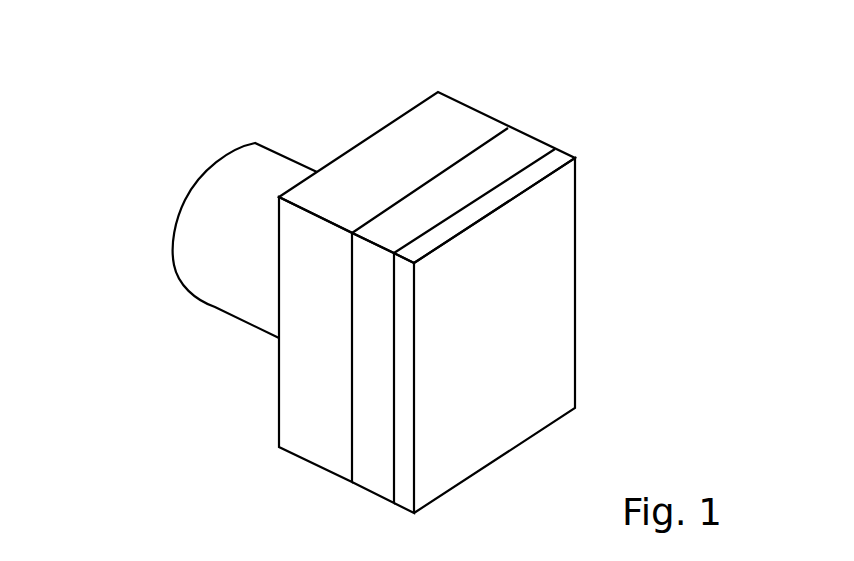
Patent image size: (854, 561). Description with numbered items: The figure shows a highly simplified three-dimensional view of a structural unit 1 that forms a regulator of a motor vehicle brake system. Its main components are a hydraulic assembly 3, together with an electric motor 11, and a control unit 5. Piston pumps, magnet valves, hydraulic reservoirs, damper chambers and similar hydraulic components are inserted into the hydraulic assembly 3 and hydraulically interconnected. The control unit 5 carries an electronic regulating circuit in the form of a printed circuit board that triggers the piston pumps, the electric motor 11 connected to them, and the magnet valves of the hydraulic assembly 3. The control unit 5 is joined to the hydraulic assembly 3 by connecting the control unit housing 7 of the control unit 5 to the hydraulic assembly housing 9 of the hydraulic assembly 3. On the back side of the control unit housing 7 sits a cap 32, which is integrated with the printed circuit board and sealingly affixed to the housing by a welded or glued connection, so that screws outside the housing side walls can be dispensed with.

The structural unit 1 is at (538, 104).
The hydraulic assembly 3 is at (312, 464).
The control unit 5 is at (388, 500).
The control unit housing 7 is at (377, 450).
The hydraulic assembly housing 9 is at (313, 395).
The electric motor 11 is at (233, 246).
The cap 32 is at (543, 248).